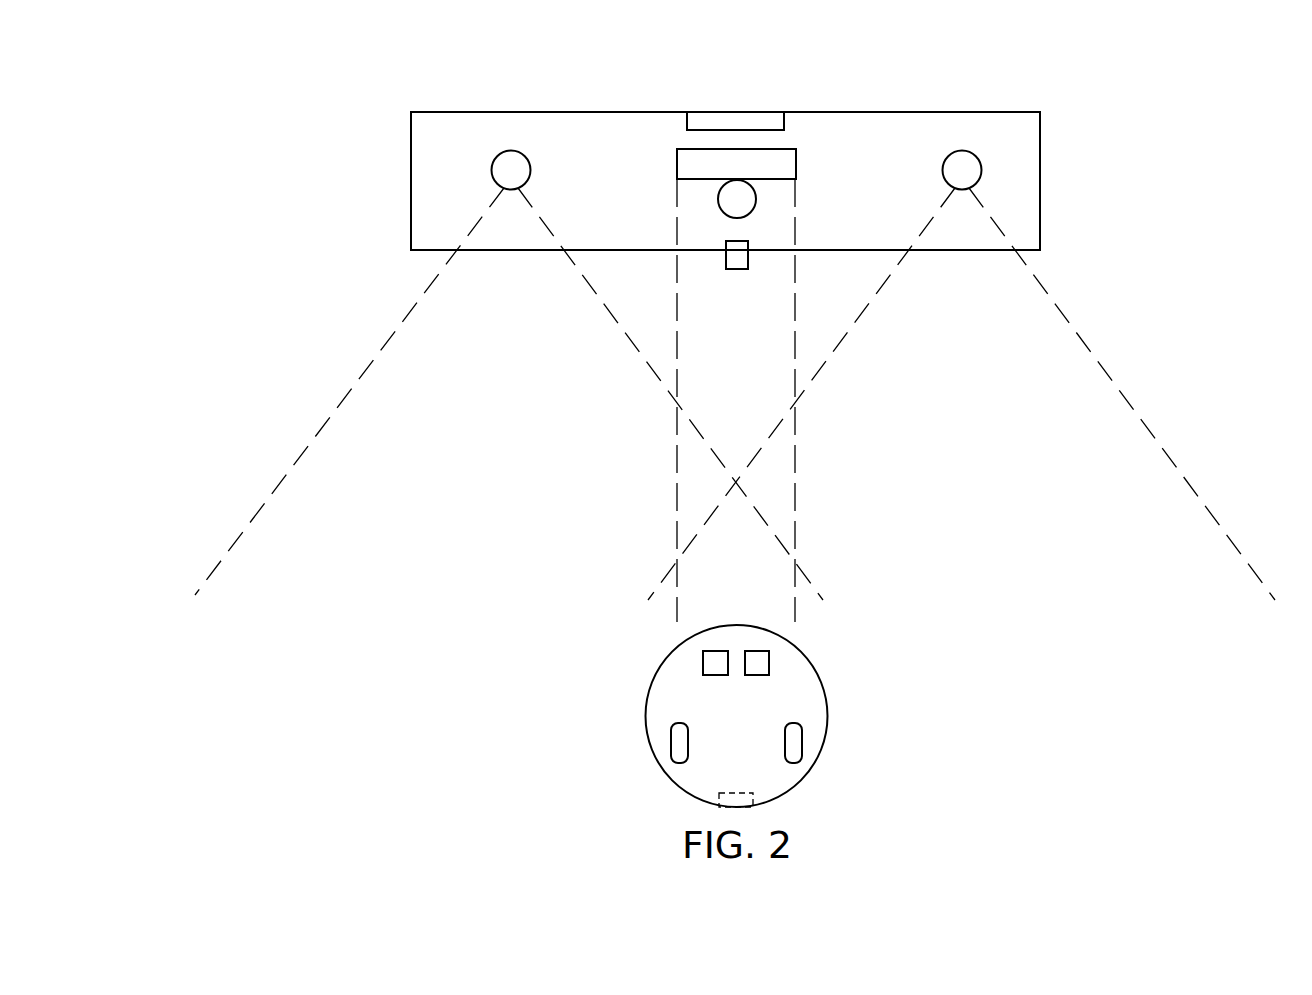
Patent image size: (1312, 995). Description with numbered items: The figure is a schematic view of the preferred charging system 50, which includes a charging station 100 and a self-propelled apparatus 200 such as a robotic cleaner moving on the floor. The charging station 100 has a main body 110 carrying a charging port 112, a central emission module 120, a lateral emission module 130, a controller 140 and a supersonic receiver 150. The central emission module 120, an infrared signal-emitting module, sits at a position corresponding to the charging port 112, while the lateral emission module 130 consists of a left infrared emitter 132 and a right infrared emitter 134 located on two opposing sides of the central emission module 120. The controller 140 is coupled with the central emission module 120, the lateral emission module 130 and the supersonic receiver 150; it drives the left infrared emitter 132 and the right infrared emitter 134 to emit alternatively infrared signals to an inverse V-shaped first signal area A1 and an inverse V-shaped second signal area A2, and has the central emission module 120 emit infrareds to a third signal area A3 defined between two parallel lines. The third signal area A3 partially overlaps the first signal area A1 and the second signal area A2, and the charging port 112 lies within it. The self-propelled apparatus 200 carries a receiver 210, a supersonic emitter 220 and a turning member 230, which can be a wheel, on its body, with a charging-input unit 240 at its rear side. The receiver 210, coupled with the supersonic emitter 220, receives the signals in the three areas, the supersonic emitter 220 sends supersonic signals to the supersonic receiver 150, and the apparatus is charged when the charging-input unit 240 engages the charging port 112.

The charging system 50 is at (188, 108).
The charging station 100 is at (355, 217).
The main body 110 is at (1040, 208).
The charging port 112 is at (740, 258).
The central emission module 120 is at (773, 167).
The lateral emission module 130 is at (1143, 164).
The left infrared emitter 132 is at (513, 169).
The right infrared emitter 134 is at (962, 170).
The controller 140 is at (735, 118).
The supersonic receiver 150 is at (740, 208).
The self-propelled apparatus 200 is at (888, 686).
The receiver 210 is at (757, 663).
The supersonic emitter 220 is at (715, 663).
The turning member 230 is at (680, 745).
The charging-input unit 240 is at (740, 800).
The first signal area A1 is at (350, 457).
The second signal area A2 is at (1088, 440).
The third signal area A3 is at (700, 293).